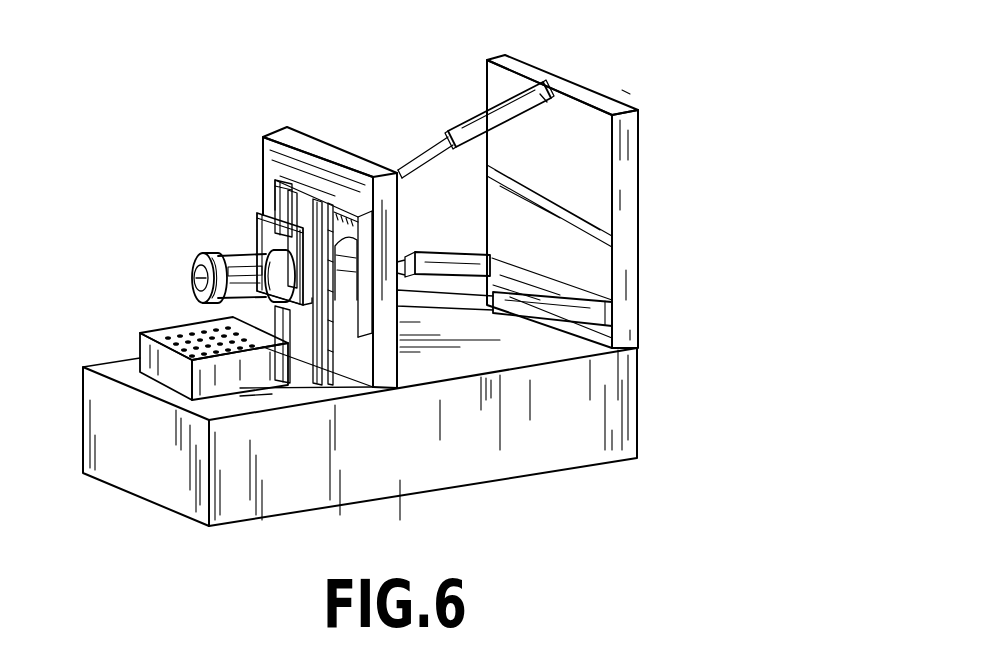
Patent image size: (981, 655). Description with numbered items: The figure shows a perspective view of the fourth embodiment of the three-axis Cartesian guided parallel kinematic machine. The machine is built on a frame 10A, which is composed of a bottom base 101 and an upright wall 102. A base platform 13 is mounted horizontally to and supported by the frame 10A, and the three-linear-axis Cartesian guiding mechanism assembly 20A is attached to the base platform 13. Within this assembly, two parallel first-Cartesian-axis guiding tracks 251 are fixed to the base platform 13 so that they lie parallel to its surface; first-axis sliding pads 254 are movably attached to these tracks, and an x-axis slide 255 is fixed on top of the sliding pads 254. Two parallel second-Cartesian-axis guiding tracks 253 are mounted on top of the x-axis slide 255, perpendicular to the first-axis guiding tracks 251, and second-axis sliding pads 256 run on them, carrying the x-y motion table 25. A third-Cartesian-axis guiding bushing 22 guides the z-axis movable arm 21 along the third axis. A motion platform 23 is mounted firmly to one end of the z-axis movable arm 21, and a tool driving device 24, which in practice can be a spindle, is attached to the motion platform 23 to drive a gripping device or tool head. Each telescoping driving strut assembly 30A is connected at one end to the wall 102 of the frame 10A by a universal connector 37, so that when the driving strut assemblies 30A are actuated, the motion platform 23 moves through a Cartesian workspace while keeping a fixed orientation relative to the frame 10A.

The frame 10A is at (622, 393).
The bottom base 101 is at (568, 438).
The wall 102 is at (628, 205).
The base platform 13 is at (390, 367).
The three-linear-axis Cartesian guiding mechanism assembly 20A is at (226, 232).
The z-axis movable arm 21 is at (215, 257).
The third-Cartesian-axis guiding bushing 22 is at (267, 245).
The motion platform 23 is at (188, 258).
The tool driving device 24 is at (203, 298).
The x-y motion table 25 is at (265, 203).
The first-Cartesian-axis guiding track 251 is at (342, 337).
The second-Cartesian-axis guiding track 253 is at (290, 343).
The first-axis sliding pad 254 is at (333, 337).
The x-axis slide 255 is at (283, 200).
The second-axis sliding pad 256 is at (332, 340).
The driving strut assembly 30A is at (460, 113).
The universal connector 37 is at (545, 87).